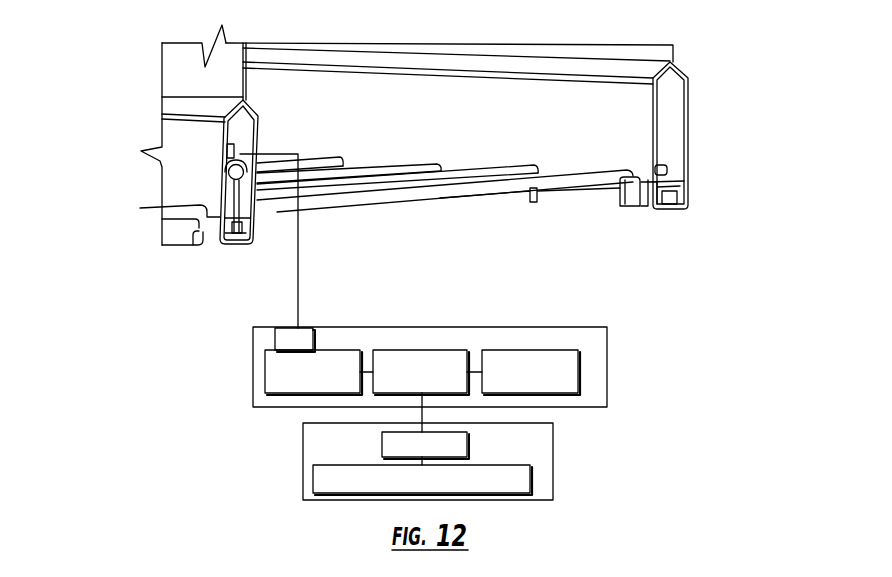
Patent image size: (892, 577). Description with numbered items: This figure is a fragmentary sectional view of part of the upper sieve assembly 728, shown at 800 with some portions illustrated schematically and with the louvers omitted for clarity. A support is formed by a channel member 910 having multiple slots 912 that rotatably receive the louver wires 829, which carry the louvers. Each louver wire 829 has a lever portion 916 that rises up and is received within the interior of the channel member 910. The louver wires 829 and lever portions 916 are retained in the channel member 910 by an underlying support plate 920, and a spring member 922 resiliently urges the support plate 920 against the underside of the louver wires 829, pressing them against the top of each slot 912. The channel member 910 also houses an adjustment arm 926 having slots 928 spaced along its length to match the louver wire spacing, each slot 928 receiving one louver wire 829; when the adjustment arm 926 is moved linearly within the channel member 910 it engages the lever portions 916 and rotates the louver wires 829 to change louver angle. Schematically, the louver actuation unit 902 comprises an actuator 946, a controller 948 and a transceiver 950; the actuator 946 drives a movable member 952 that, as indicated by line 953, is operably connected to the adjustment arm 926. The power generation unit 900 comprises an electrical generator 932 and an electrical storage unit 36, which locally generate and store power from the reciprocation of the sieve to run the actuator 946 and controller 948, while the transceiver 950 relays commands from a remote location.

The window assembly 800 is at (127, 107).
The upper sieve assembly 728 is at (679, 47).
The channel member 910 is at (689, 100).
The support plate 920 is at (684, 182).
The adjustment arm 926 is at (228, 172).
The slots 928 is at (240, 163).
The lever portion 916 is at (243, 175).
The spring member 922 is at (236, 238).
The line 953 is at (299, 284).
The louver wires 829 is at (313, 158).
The slots 912 is at (346, 166).
The louver actuation unit 902 is at (608, 358).
The movable member 952 is at (275, 337).
The actuator 946 is at (285, 396).
The controller 948 is at (433, 350).
The transceiver 950 is at (553, 350).
The power generation unit 900 is at (553, 480).
The electrical storage unit 36 is at (467, 440).
The electrical generator 932 is at (510, 494).